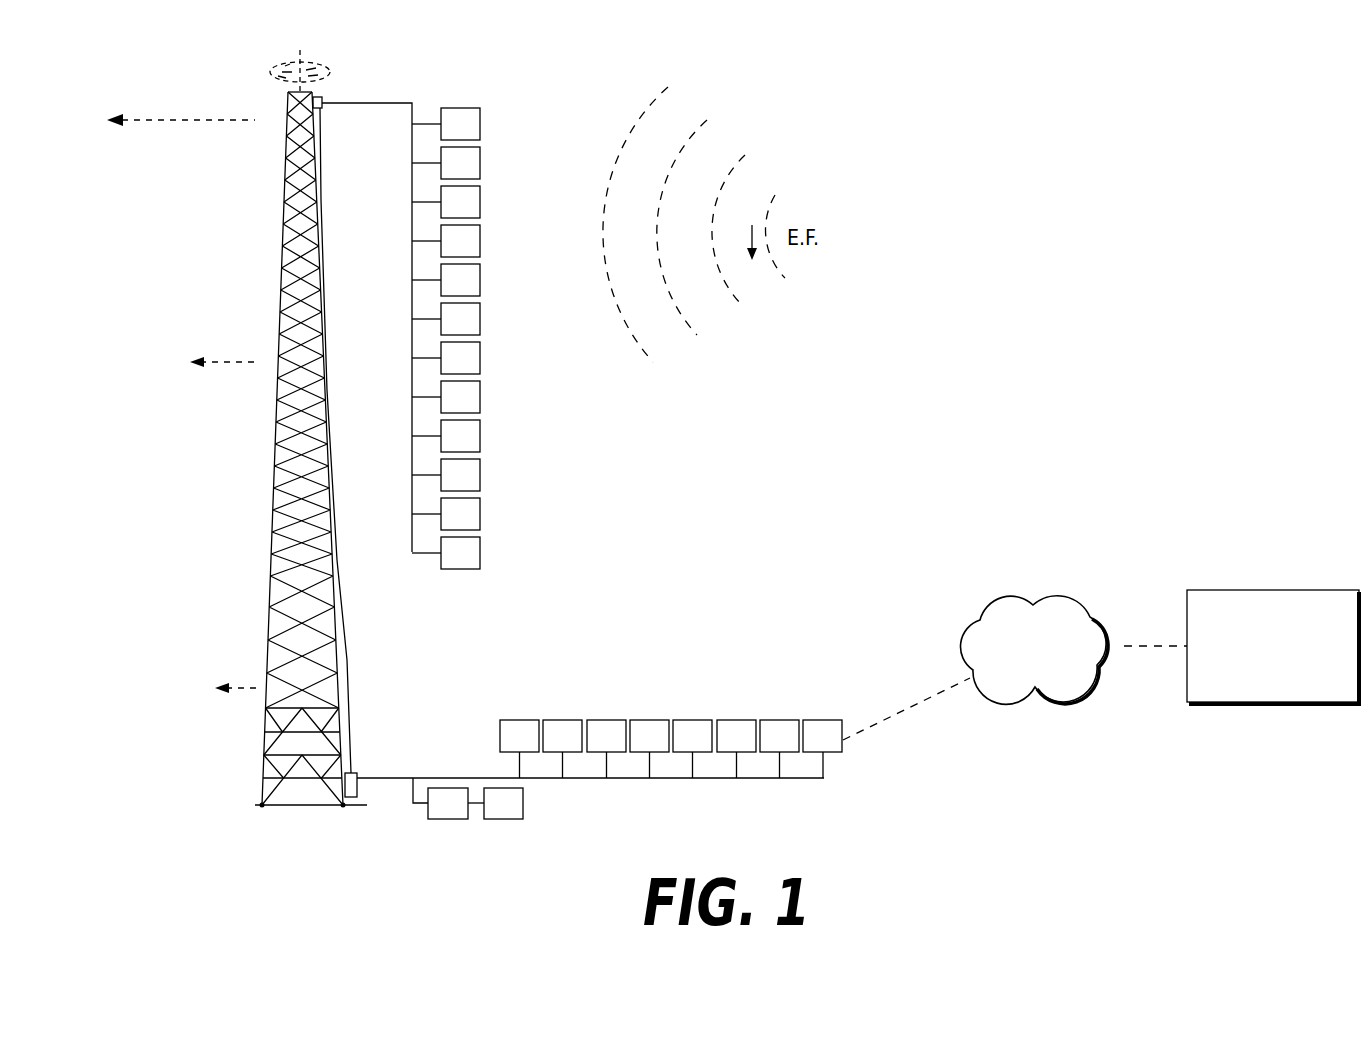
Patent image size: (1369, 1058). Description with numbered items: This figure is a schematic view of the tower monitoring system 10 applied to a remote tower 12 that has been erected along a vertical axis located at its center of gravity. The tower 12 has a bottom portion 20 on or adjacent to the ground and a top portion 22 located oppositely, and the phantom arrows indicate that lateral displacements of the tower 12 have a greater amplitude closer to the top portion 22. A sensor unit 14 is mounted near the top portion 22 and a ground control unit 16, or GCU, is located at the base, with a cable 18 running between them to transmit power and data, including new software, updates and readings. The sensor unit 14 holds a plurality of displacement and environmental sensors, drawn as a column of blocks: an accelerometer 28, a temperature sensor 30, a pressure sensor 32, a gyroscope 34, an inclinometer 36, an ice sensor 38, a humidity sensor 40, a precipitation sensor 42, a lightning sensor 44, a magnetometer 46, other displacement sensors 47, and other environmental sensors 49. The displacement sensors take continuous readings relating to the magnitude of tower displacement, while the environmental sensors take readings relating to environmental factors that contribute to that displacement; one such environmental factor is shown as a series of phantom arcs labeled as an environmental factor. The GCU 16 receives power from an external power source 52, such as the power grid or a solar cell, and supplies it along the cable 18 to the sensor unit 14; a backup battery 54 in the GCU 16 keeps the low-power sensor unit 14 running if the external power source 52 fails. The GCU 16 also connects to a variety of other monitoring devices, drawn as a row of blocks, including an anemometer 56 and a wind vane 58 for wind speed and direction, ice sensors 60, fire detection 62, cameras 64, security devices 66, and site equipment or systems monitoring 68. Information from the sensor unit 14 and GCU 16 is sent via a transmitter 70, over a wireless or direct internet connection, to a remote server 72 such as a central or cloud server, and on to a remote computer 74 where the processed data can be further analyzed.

The tower monitoring system 10 is at (1284, 192).
The tower 12 is at (280, 332).
The sensor unit 14 is at (332, 112).
The ground control unit 16 is at (370, 763).
The cable 18 is at (331, 381).
The bottom portion 20 is at (252, 778).
The top portion 22 is at (276, 128).
The accelerometer 28 is at (471, 137).
The temperature sensor 30 is at (471, 176).
The pressure sensor 32 is at (471, 215).
The gyroscope 34 is at (471, 254).
The inclinometer 36 is at (471, 293).
The ice sensor 38 is at (471, 332).
The humidity sensor 40 is at (471, 371).
The precipitation sensor 42 is at (471, 410).
The lightning sensor 44 is at (471, 449).
The magnetometer 46 is at (471, 488).
The other displacement sensors 47 is at (471, 527).
The other environmental sensors 49 is at (471, 566).
The external power source 52 is at (514, 816).
The backup battery 54 is at (459, 816).
The anemometer 56 is at (530, 749).
The wind vane 58 is at (573, 749).
The ice sensors 60 is at (617, 749).
The fire detection 62 is at (660, 749).
The cameras 64 is at (703, 749).
The security devices 66 is at (747, 749).
The site equipment or systems monitoring 68 is at (790, 749).
The transmitter 70 is at (833, 749).
The remote server 72 is at (1047, 659).
The remote computer 74 is at (1284, 659).